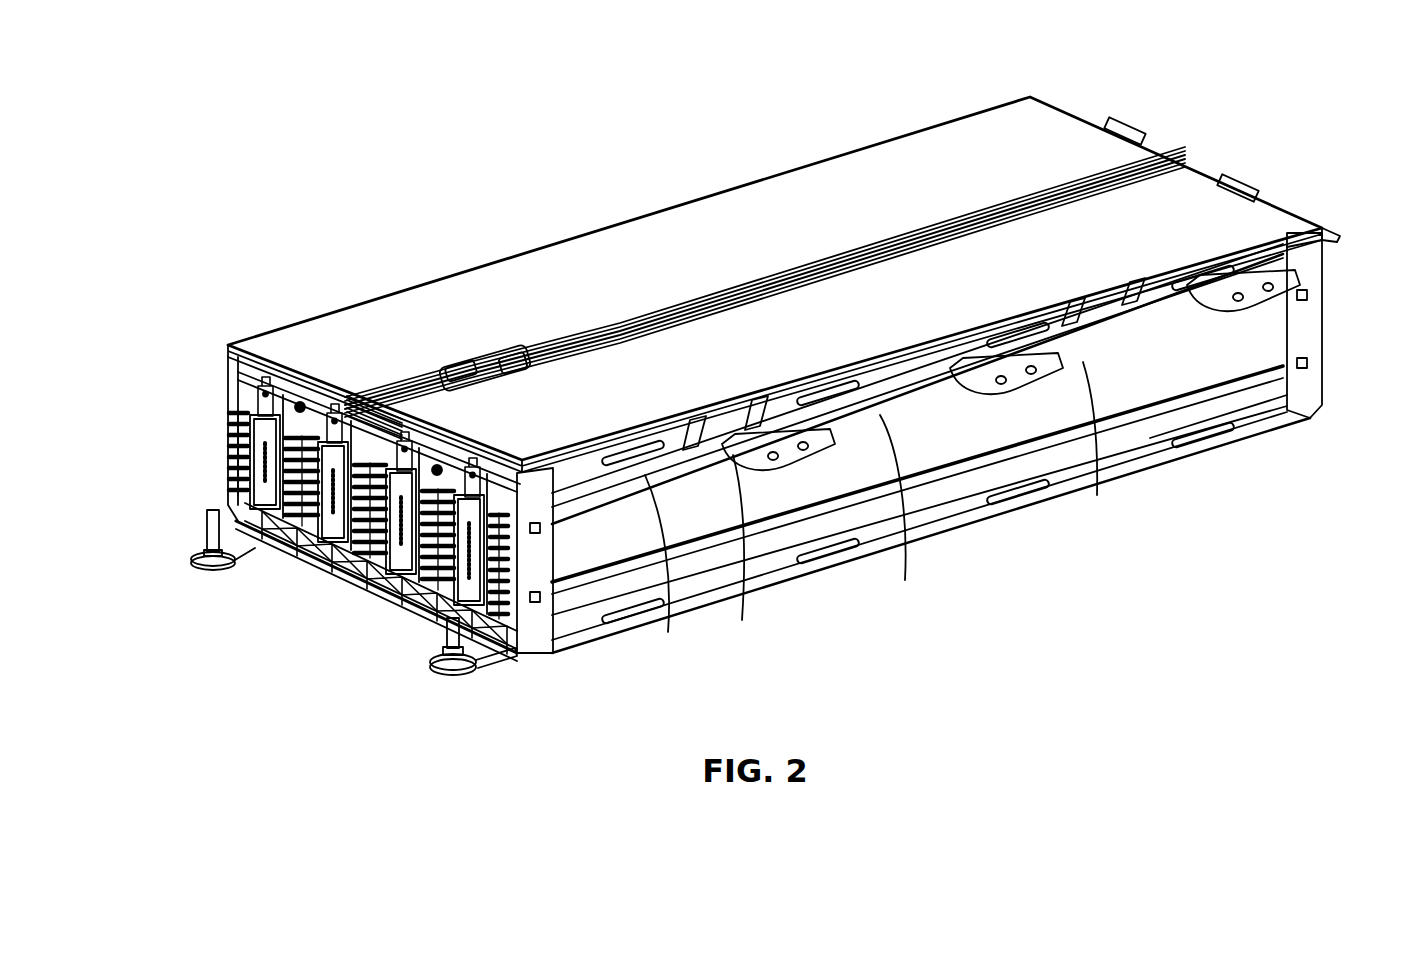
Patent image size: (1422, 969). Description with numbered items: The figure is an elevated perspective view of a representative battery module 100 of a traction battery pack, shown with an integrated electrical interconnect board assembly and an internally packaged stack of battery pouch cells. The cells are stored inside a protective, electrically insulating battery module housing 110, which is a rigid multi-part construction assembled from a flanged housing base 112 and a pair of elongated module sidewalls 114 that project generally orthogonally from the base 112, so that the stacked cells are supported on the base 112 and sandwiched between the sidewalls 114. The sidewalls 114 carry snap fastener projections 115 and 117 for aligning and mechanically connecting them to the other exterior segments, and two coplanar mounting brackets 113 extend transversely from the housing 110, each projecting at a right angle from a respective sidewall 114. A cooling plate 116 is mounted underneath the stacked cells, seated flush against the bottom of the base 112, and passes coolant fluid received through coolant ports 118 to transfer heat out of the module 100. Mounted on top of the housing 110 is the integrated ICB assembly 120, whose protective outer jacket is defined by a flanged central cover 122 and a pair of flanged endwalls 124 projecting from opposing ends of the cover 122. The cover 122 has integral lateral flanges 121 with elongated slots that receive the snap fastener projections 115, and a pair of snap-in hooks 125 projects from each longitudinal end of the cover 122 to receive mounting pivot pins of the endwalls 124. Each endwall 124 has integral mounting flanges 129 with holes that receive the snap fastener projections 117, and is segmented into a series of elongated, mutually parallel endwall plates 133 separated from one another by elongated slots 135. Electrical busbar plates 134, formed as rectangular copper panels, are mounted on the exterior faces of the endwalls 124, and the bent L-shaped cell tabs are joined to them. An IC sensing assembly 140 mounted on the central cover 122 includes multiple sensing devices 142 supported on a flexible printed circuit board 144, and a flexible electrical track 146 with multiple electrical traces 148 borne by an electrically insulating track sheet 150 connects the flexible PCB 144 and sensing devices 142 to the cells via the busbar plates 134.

The battery module 100 is at (336, 76).
The battery module housing 110 is at (1257, 515).
The housing base 112 is at (853, 553).
The mounting brackets 113 is at (1290, 262).
The module sidewalls 114 is at (1267, 393).
The snap fastener projections 115 is at (1197, 442).
The cooling plate 116 is at (445, 683).
The snap fastener projections 117 is at (1302, 363).
The coolant ports 118 is at (205, 517).
The integrated interconnect board (ICB) assembly 120 is at (670, 178).
The lateral flanges 121 is at (707, 440).
The central cover 122 is at (922, 163).
The endwalls 124 is at (1082, 116).
The snap-in hooks 125 is at (270, 378).
The mounting flanges 129 is at (1300, 315).
The endwall plates 133 is at (287, 563).
The electrical busbar plates 134 is at (333, 385).
The elongated slots 135 is at (273, 550).
The IC sensing assembly 140 is at (485, 328).
The sensing devices 142 is at (497, 385).
The flexible printed circuit board 144 is at (445, 372).
The flexible electrical track 146 is at (860, 212).
The electrical traces 148 is at (893, 235).
The track sheet 150 is at (823, 258).